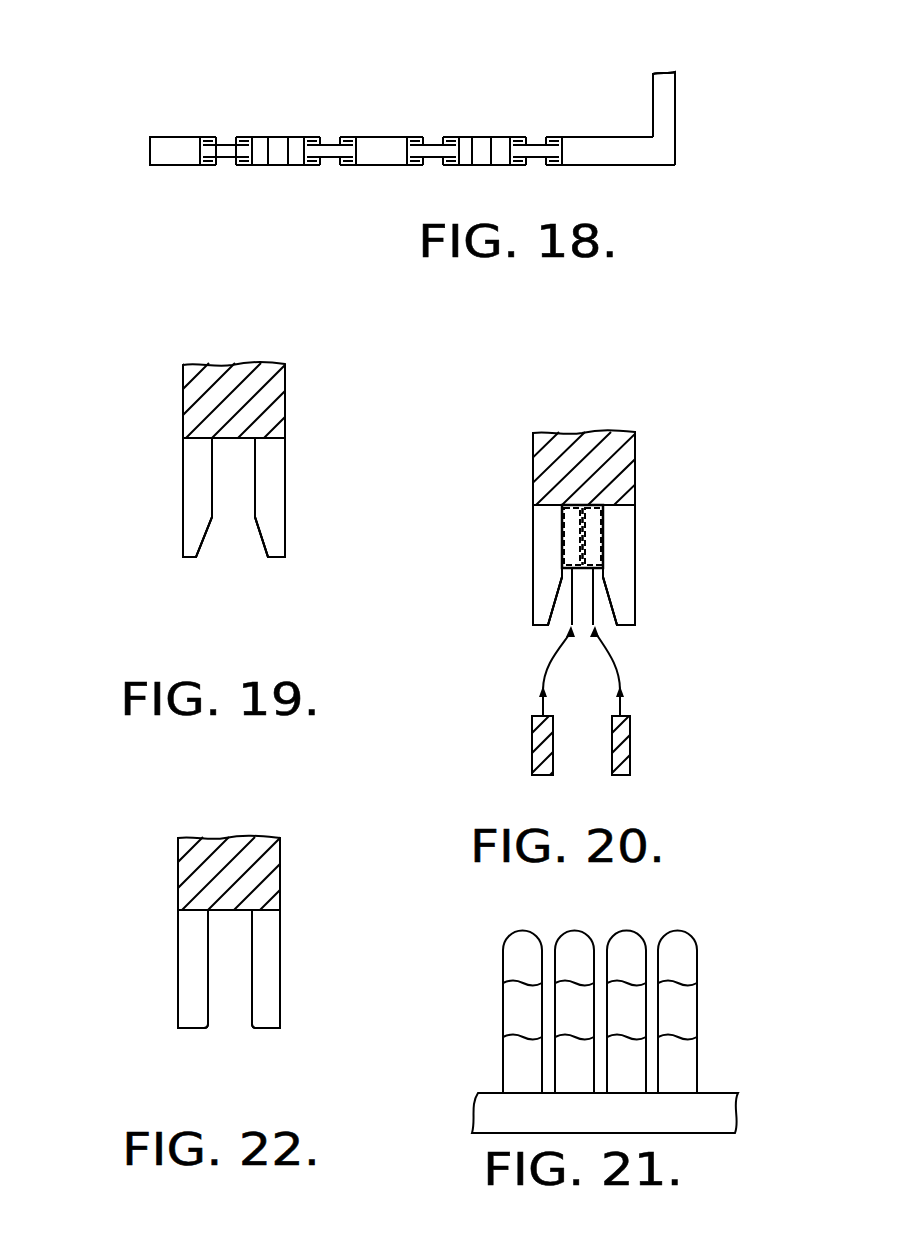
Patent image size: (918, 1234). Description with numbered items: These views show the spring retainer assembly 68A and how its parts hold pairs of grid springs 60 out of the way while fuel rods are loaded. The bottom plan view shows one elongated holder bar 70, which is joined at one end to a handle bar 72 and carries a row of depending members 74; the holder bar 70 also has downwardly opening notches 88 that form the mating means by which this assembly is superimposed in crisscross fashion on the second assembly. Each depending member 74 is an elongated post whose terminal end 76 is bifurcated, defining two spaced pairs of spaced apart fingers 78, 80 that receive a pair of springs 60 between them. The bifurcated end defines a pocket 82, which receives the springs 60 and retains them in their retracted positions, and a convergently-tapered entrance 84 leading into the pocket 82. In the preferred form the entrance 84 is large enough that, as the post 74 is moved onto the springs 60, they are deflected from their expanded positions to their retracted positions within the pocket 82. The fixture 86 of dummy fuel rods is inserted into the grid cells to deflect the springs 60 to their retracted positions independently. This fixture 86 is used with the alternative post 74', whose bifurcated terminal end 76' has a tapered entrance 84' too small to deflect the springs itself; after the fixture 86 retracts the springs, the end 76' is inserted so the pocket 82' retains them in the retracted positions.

In FIG. 18, the first spring retainer assembly 68A is at (553, 78).
In FIG. 18, the holder bar 70 is at (170, 137).
In FIG. 18, the handle bar 72 is at (670, 107).
In FIG. 18, the depending member 74 is at (345, 190).
In FIG. 19, the depending member 74 is at (200, 391).
In FIG. 20, the depending member 74 is at (610, 458).
In FIG. 19, the terminal end 76 is at (173, 420).
In FIG. 20, the terminal end 76 is at (640, 473).
In FIG. 18, the finger 78 is at (203, 165).
In FIG. 18, the finger 80 is at (242, 165).
In FIG. 19, the finger 80 is at (190, 508).
In FIG. 20, the finger 80 is at (545, 583).
In FIG. 18, the pocket 82 is at (230, 105).
In FIG. 19, the pocket 82 is at (238, 403).
In FIG. 20, the pocket 82 is at (516, 565).
In FIG. 19, the convergently-tapered entrance 84 is at (225, 581).
In FIG. 20, the convergently-tapered entrance 84 is at (582, 638).
In FIG. 21, the fixture 86 is at (700, 922).
In FIG. 18, the notch 88 is at (280, 137).
In FIG. 20, the spring 60 is at (565, 530).
In FIG. 22, the bifurcated terminal end 76' is at (164, 901).
In FIG. 22, the post 74' is at (250, 870).
In FIG. 22, the pocket 82' is at (301, 967).
In FIG. 22, the tapered entrance 84' is at (276, 1041).